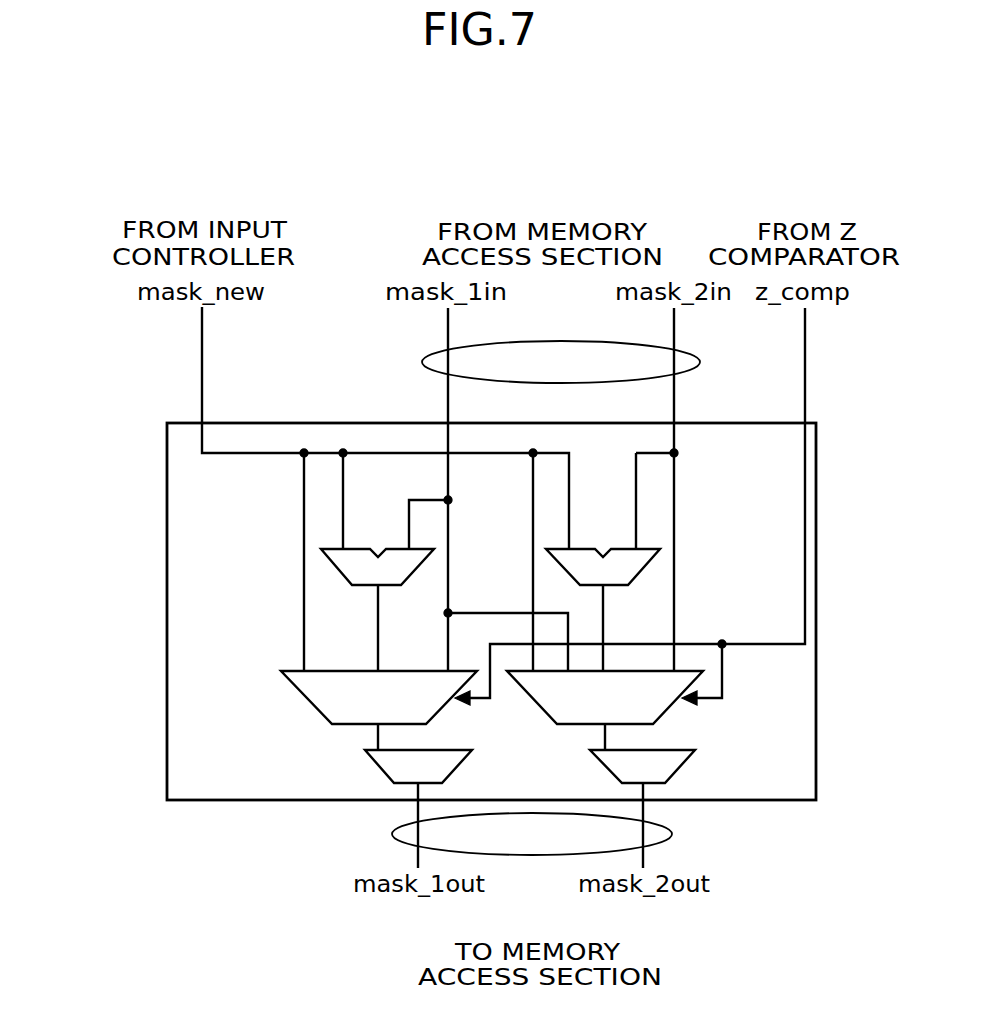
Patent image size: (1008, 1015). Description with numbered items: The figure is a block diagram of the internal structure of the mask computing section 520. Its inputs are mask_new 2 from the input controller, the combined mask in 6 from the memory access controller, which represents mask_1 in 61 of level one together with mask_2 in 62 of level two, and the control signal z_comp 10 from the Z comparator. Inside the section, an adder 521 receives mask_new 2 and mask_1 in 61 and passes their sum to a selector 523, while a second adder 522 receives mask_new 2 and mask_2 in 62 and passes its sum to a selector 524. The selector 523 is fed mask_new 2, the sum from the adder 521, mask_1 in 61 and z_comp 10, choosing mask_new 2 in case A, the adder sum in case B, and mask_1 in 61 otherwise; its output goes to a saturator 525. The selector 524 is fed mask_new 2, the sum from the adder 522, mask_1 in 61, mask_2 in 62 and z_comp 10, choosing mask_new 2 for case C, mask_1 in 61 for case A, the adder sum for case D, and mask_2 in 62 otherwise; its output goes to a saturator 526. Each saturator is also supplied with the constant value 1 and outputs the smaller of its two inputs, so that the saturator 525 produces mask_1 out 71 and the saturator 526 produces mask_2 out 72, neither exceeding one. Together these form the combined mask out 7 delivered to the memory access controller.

The mask_new 2 is at (202, 381).
The mask_1 in 61 is at (448, 328).
The mask_2 in 62 is at (674, 330).
The z_comp 10 is at (805, 340).
The mask in 6 is at (558, 383).
The mask computing section 520 is at (167, 527).
The adder 521 is at (418, 570).
The adder 522 is at (644, 570).
The selector 523 is at (306, 690).
The selector 524 is at (700, 682).
The saturator 525 is at (375, 765).
The saturator 526 is at (690, 767).
The constant value 1 is at (430, 749).
The mask_1 out 71 is at (413, 855).
The mask_2 out 72 is at (648, 856).
The mask out 7 is at (526, 856).